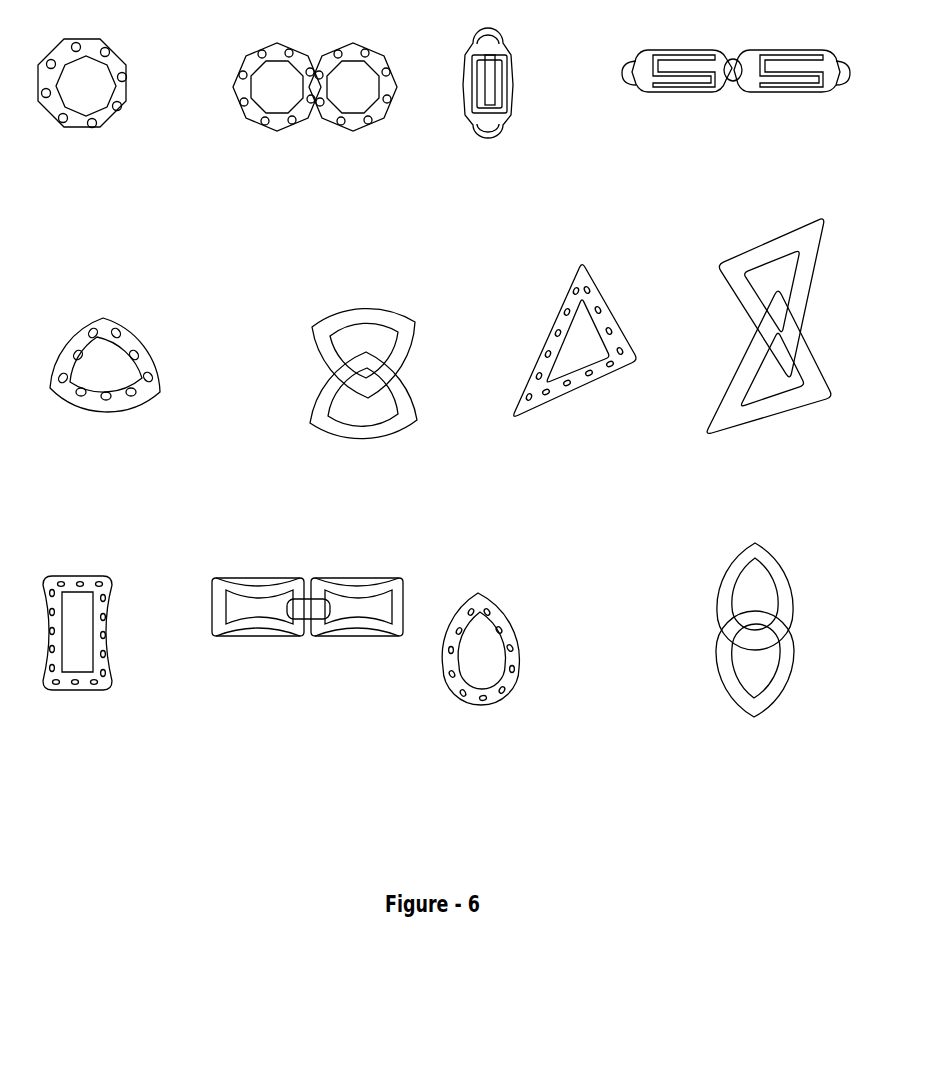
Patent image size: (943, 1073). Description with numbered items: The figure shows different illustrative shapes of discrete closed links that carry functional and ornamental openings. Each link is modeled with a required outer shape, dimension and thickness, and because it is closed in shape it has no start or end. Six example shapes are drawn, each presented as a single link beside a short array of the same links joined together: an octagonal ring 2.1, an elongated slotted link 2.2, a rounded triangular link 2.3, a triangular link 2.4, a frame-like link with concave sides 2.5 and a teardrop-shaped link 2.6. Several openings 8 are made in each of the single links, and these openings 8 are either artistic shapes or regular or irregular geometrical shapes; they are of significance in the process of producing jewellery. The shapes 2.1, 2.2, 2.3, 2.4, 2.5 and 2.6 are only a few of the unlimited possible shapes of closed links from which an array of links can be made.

The openings 8 is at (122, 64).
The closed link shape 2.1 is at (217, 85).
The closed link shape 2.2 is at (517, 93).
The closed link shape 2.3 is at (153, 367).
The closed link shape 2.4 is at (672, 326).
The closed link shape 2.5 is at (223, 633).
The closed link shape 2.6 is at (530, 650).